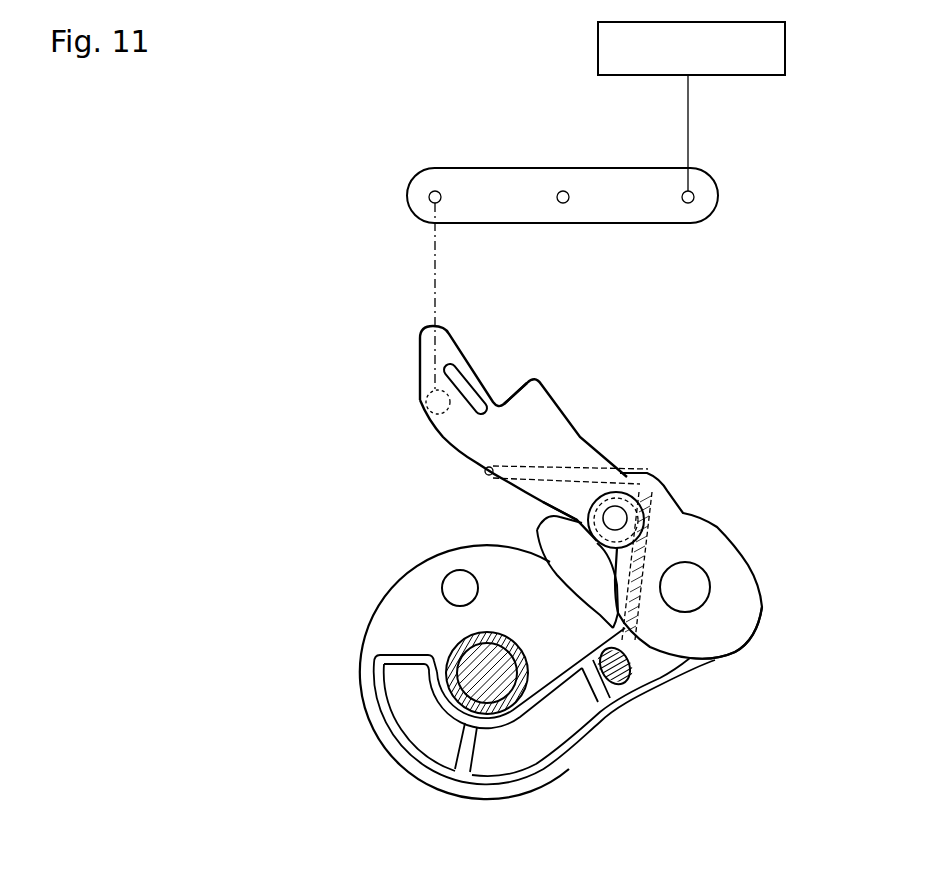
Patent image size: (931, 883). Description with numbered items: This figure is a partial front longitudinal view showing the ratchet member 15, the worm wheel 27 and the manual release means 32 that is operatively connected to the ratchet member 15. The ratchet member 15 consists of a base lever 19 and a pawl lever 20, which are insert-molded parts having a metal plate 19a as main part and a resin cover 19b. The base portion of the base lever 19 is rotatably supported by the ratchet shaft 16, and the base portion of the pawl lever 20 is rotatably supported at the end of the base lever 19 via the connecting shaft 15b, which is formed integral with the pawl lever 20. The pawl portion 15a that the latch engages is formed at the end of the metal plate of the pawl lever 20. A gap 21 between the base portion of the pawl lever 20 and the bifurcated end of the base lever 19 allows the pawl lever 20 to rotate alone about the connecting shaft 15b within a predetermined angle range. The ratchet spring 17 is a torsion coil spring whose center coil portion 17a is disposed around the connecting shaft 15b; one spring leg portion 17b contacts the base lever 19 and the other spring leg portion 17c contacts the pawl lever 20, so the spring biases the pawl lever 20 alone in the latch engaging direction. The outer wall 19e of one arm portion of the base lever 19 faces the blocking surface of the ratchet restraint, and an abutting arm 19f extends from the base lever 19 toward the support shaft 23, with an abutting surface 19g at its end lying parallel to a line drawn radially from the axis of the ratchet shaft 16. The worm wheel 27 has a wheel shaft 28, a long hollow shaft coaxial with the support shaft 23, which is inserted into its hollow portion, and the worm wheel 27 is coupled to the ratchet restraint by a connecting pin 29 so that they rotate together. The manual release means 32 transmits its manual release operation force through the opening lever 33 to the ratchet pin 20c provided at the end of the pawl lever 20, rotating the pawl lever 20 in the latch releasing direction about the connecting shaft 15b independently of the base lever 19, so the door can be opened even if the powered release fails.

The ratchet member 15 is at (657, 458).
The pawl portion 15a is at (513, 385).
The connecting shaft 15b is at (645, 482).
The ratchet shaft 16 is at (690, 583).
The ratchet spring 17 is at (576, 565).
The center coil portion 17a is at (660, 512).
The spring leg portion 17b is at (632, 667).
The spring leg portion 17c is at (484, 470).
The base lever 19 is at (731, 547).
The metal plate 19a is at (546, 528).
The resin cover 19b is at (710, 627).
The outer wall 19e is at (558, 622).
The abutting arm 19f is at (617, 702).
The abutting surface 19g is at (397, 657).
The pawl lever 20 is at (560, 412).
The ratchet pin 20c is at (425, 398).
The gap 21 is at (552, 512).
The support shaft 23 is at (487, 683).
The worm wheel 27 is at (407, 602).
The wheel shaft 28 is at (448, 657).
The connecting pin 29 is at (445, 583).
The manual release means 32 is at (747, 75).
The opening lever 33 is at (508, 182).